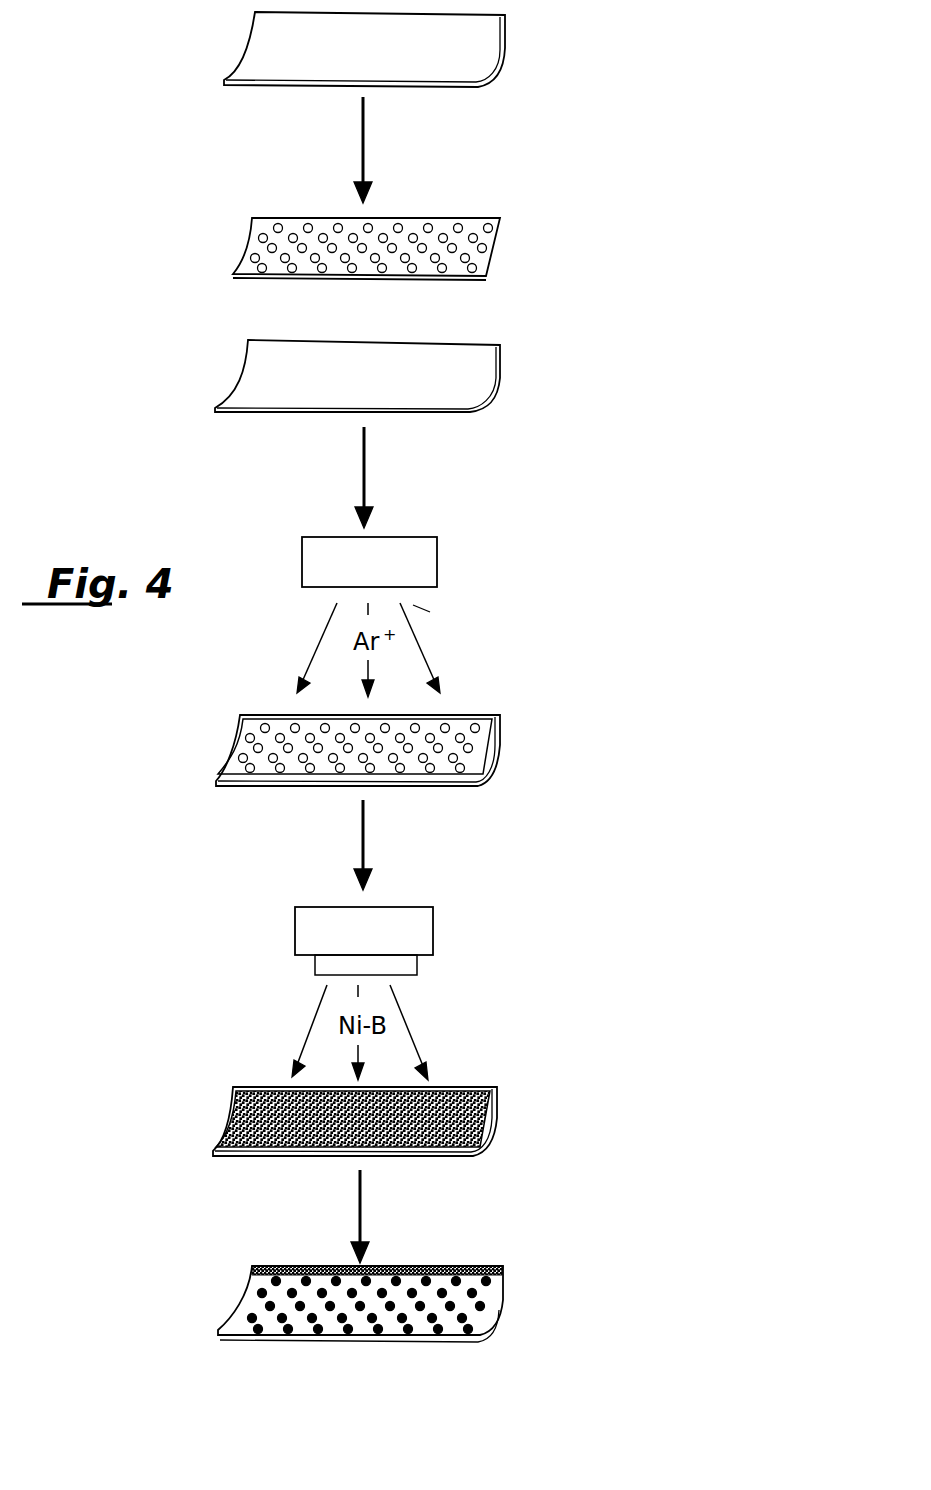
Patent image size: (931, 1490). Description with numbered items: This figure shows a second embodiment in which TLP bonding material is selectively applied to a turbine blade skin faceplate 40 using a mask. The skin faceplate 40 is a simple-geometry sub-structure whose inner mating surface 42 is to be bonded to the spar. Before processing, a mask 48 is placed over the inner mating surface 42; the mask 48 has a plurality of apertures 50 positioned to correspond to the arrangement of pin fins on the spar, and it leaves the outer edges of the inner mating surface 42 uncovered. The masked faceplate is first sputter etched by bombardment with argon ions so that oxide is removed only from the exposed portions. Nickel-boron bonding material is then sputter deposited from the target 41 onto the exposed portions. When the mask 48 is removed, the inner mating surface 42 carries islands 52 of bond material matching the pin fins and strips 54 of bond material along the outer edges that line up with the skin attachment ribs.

The skin faceplate 40 is at (497, 53).
The mask 48 is at (370, 221).
The apertures 50 is at (462, 222).
The inner mating surface 42 is at (487, 378).
The target 41 is at (417, 960).
The islands of bond material 52 is at (258, 1290).
The strips of bond material 54 is at (463, 1268).